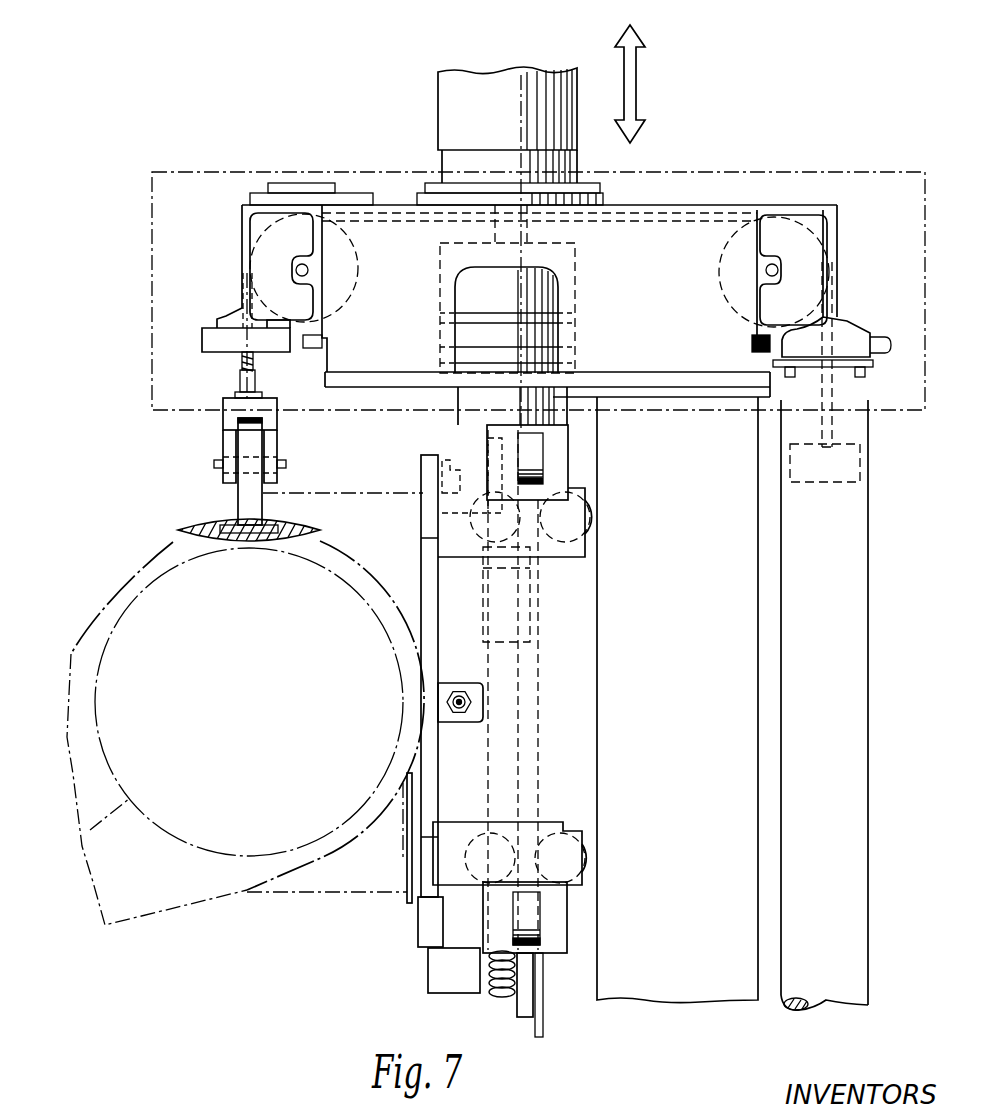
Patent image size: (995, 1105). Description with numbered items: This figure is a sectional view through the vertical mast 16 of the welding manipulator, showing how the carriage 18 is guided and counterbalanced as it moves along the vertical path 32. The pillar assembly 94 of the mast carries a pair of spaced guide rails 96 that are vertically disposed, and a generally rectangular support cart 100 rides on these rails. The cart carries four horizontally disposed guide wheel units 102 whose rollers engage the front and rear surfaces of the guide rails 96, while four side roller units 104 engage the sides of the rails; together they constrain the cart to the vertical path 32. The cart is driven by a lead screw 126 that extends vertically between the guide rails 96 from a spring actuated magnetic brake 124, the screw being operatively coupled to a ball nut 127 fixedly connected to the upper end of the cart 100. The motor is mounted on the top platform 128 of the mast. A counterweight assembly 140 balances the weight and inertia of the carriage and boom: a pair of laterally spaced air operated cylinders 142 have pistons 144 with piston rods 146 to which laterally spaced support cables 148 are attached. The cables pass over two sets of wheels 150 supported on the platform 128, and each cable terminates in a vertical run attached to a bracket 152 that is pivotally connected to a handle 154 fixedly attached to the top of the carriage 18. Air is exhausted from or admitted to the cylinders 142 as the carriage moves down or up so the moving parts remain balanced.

The vertical mast 16 is at (702, 981).
The carriage 18 is at (237, 894).
The vertical path 32 is at (637, 73).
The pillar assembly 94 is at (644, 968).
The guide rails 96 is at (533, 737).
The support cart 100 is at (421, 580).
The guide wheel units 102 is at (583, 553).
The side roller units 104 is at (528, 448).
The spring actuated magnetic brake 124 is at (553, 291).
The lead screw 126 is at (493, 990).
The ball nut 127 is at (542, 608).
The top platform 128 is at (403, 205).
The counterweight assembly 140 is at (241, 380).
The air operated cylinders 142 is at (808, 868).
The pistons 144 is at (833, 480).
The piston rods 146 is at (830, 432).
The support cables 148 is at (240, 359).
The wheels 150 is at (267, 260).
The bracket 152 is at (267, 418).
The handle 154 is at (250, 475).